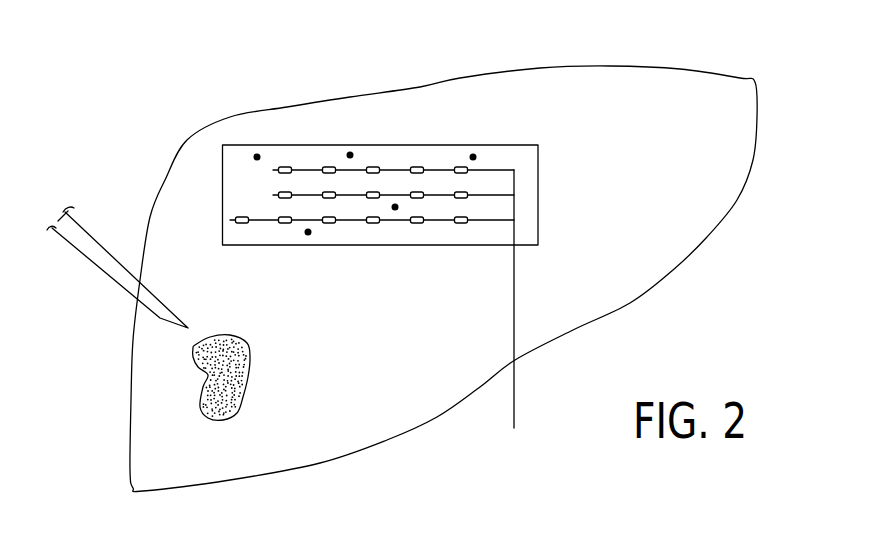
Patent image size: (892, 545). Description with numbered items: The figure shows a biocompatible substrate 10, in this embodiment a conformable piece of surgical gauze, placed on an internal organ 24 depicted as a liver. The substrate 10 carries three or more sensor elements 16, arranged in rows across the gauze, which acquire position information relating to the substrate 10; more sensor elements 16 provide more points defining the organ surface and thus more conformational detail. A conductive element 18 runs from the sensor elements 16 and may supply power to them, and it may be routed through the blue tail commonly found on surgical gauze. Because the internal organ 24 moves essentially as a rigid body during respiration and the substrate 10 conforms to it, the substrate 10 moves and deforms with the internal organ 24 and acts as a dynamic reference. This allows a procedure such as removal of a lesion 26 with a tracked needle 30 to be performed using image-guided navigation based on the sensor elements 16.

The biocompatible substrate 10 is at (425, 128).
The sensor elements 16 is at (329, 167).
The conductive element 18 is at (514, 262).
The internal organ 24 is at (437, 425).
The lesion 26 is at (247, 390).
The tracked needle 30 is at (128, 272).